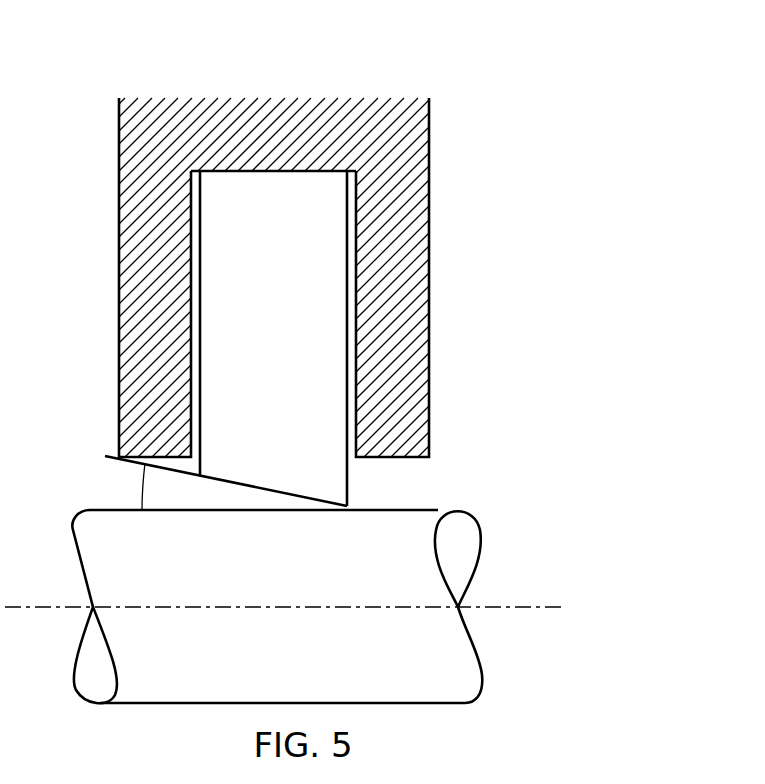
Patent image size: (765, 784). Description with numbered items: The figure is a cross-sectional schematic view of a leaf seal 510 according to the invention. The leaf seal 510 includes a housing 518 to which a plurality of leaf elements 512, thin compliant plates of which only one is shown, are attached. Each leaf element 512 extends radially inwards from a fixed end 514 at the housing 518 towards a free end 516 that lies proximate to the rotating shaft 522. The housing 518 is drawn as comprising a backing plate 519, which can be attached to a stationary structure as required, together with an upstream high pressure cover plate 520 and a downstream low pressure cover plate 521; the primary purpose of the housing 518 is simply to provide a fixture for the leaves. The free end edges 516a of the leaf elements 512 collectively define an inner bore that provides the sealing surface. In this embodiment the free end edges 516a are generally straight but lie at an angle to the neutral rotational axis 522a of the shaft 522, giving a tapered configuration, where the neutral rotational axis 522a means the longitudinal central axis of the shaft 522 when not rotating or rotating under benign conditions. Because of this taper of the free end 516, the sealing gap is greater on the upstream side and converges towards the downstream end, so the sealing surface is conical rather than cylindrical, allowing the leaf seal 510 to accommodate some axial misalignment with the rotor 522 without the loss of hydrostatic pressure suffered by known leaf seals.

The leaf seal 510 is at (525, 70).
The leaf element 512 is at (297, 315).
The fixed end 514 is at (322, 213).
The free end 516 is at (320, 428).
The free end edge 516a is at (228, 477).
The housing 518 is at (240, 118).
The backing plate 519 is at (345, 130).
The upstream high pressure cover plate 520 is at (132, 217).
The downstream low pressure cover plate 521 is at (415, 310).
The rotating shaft 522 is at (250, 573).
The neutral rotational axis 522a is at (527, 609).